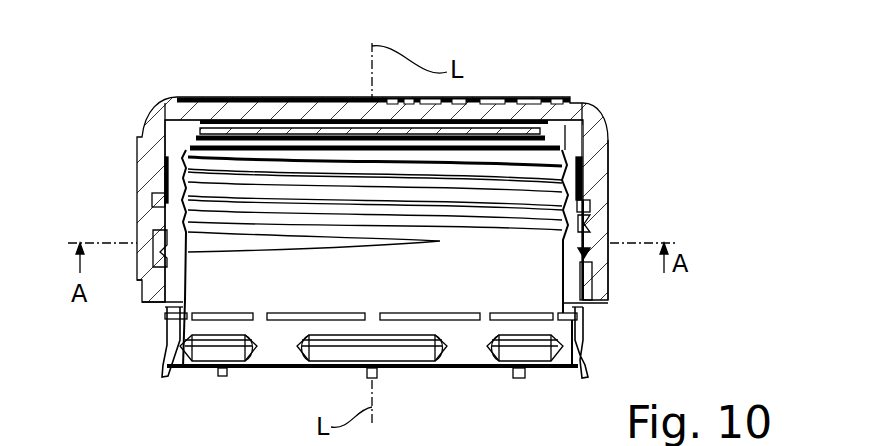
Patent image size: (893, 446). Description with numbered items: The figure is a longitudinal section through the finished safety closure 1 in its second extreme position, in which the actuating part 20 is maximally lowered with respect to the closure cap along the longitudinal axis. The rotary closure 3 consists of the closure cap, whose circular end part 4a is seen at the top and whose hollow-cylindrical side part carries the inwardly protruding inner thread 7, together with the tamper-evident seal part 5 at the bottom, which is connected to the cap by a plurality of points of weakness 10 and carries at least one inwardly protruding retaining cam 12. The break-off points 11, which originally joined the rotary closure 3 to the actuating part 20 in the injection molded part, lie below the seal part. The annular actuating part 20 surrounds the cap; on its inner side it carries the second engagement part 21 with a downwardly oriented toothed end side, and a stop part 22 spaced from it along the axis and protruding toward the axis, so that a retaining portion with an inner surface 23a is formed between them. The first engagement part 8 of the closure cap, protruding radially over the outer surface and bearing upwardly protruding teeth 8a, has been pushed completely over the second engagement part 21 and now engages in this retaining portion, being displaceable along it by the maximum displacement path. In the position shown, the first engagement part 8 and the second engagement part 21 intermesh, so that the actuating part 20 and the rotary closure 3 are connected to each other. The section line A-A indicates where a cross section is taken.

The safety closure 1 is at (648, 80).
The rotary closure 3 is at (182, 135).
The circular end part 4a is at (365, 98).
The tamper-evident seal part 5 is at (572, 343).
The inner thread 7 is at (297, 237).
The first engagement part 8 is at (155, 222).
The teeth 8a is at (157, 204).
The points of weakness 10 is at (259, 315).
The break-off points 11 is at (218, 374).
The retaining cam 12 is at (402, 357).
The actuating part 20 is at (600, 150).
The second engagement part 21 is at (586, 205).
The stop part 22 is at (583, 261).
The inner surface 23a is at (581, 255).